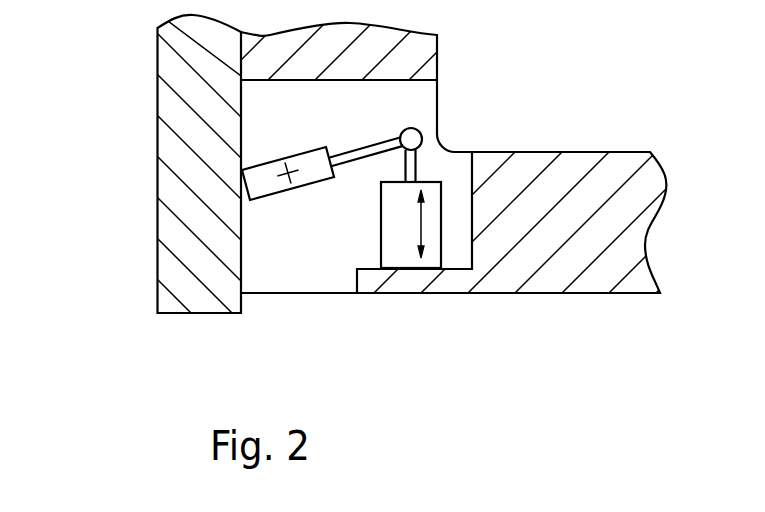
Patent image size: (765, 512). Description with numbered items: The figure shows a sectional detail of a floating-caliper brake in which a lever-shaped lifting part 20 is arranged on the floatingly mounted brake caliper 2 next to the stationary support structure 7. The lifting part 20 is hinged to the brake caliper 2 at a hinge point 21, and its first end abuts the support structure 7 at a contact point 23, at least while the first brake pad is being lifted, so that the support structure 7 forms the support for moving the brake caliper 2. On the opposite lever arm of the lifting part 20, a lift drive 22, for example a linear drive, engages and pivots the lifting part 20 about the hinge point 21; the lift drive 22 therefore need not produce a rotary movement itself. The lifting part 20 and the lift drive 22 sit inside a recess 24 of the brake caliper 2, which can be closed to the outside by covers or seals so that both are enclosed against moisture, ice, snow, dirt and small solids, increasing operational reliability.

The brake caliper 2 is at (548, 230).
The support structure 7 is at (200, 92).
The lifting part 20 is at (232, 260).
The hinge point 21 is at (318, 165).
The lift drive 22 is at (401, 233).
The contact point 23 is at (242, 172).
The recess 24 is at (282, 252).